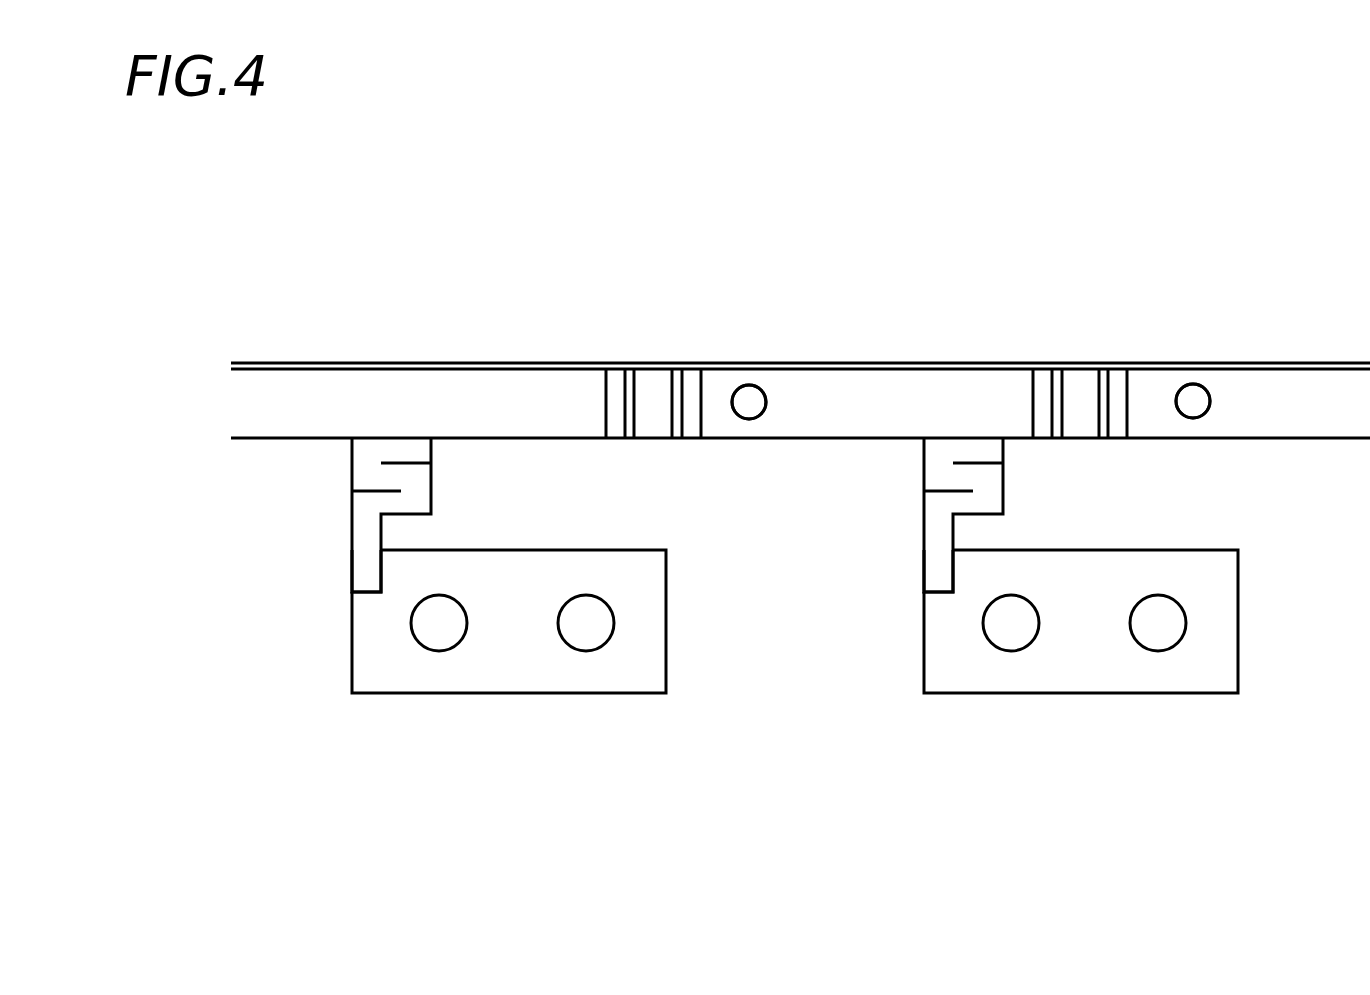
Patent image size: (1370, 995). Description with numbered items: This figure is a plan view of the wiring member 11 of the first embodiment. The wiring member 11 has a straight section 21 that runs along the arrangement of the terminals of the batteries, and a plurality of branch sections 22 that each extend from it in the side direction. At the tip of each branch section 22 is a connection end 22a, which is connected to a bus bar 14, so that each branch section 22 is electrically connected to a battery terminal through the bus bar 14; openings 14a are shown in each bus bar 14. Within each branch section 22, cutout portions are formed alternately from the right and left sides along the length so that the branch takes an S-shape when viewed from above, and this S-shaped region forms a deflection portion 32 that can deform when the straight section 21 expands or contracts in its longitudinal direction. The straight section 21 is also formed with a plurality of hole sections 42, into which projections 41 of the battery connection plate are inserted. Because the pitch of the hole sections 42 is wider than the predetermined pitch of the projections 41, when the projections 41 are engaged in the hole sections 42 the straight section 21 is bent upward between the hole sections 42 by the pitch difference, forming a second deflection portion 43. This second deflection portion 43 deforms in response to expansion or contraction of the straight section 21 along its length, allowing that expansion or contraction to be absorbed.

The wiring member 11 is at (440, 310).
The straight section 21 is at (549, 363).
The branch section 22 is at (343, 512).
The connection end 22a is at (365, 575).
The deflection portion 32 is at (433, 478).
The projection 41 is at (745, 400).
The hole section 42 is at (765, 395).
The second deflection portion 43 is at (652, 395).
The bus bar 14 is at (498, 693).
The mounting hole 14a is at (418, 632).